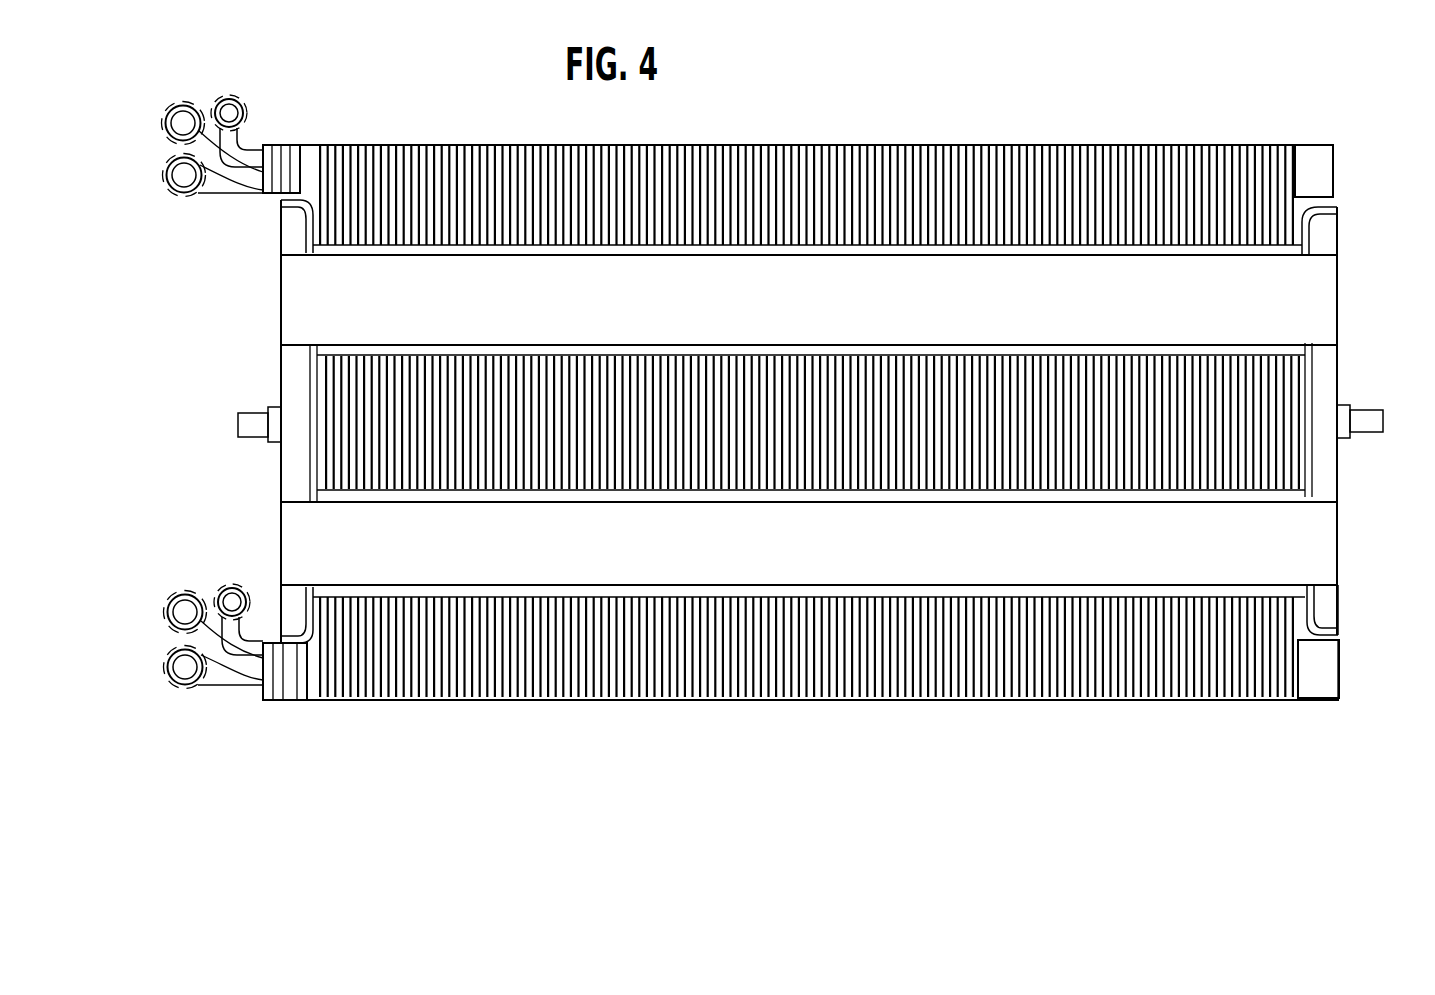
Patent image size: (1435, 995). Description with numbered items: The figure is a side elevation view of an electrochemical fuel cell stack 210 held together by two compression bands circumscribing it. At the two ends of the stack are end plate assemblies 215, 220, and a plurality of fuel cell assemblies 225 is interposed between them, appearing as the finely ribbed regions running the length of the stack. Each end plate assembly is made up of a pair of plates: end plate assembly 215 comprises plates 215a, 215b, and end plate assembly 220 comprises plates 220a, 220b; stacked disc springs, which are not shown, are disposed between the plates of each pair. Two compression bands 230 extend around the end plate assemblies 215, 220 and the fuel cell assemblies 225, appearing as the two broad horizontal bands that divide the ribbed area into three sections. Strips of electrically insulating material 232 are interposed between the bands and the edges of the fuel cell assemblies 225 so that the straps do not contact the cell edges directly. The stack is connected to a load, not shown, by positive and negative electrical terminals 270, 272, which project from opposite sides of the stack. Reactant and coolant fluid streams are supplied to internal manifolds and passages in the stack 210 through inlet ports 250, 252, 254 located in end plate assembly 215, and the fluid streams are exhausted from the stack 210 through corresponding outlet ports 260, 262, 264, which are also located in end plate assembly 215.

The electrochemical fuel cell stack 210 is at (790, 113).
The end plate assembly 215 is at (265, 706).
The plate 215a is at (320, 160).
The plate 215b is at (283, 485).
The end plate assembly 220 is at (1323, 702).
The plate 220a is at (1325, 678).
The plate 220b is at (1330, 600).
The fuel cell assemblies 225 is at (927, 698).
The compression bands 230 is at (1328, 283).
The strips of electrically insulating material 232 is at (910, 247).
The inlet port 250 is at (182, 197).
The inlet port 252 is at (165, 117).
The inlet port 254 is at (228, 95).
The outlet port 260 is at (185, 690).
The outlet port 262 is at (170, 620).
The outlet port 264 is at (232, 588).
The electrical terminal 270 is at (240, 426).
The electrical terminal 272 is at (1363, 418).